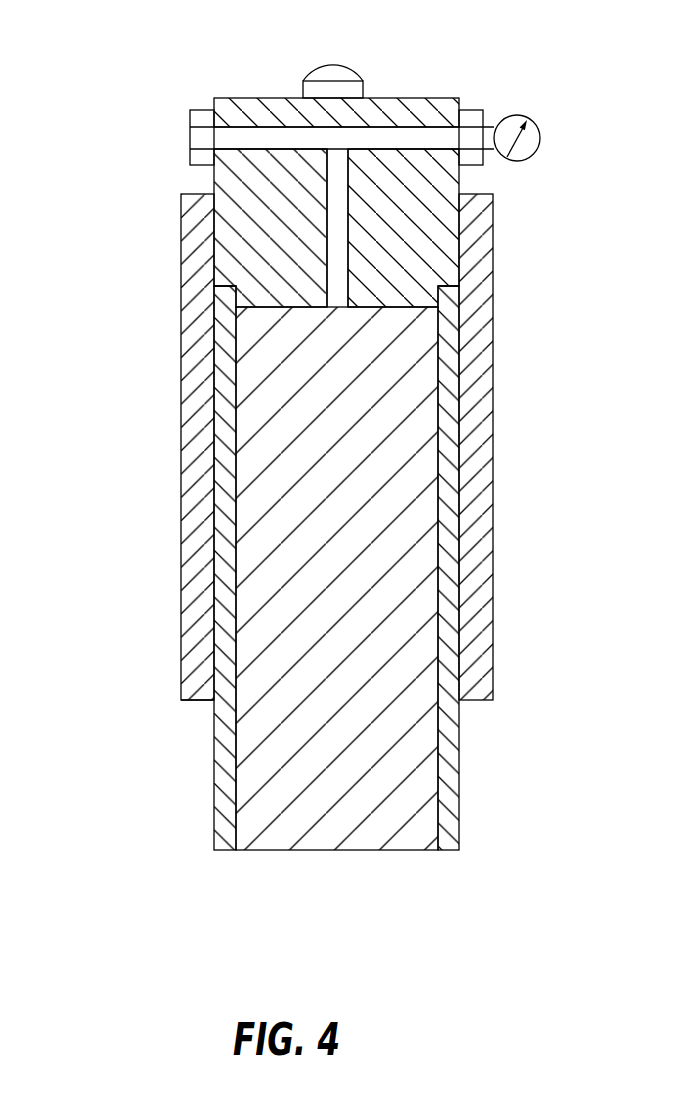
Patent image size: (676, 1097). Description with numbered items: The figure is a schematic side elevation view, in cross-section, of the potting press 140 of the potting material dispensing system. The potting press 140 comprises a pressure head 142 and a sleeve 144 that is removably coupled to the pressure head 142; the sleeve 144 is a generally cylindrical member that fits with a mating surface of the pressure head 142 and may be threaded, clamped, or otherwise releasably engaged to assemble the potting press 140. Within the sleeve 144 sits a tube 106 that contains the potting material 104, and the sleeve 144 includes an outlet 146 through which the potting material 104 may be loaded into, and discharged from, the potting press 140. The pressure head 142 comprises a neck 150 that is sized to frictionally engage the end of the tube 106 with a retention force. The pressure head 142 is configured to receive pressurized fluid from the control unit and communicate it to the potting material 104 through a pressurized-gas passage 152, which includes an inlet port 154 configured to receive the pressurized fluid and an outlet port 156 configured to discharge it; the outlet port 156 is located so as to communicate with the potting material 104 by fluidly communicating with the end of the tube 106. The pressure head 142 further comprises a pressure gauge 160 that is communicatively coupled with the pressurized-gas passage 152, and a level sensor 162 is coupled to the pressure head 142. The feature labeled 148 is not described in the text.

The potting press 140 is at (98, 244).
The pressure head 142 is at (249, 96).
The sleeve 144 is at (476, 517).
The outlet 146 is at (209, 710).
The left inner sleeve lip 148 is at (222, 300).
The neck 150 is at (458, 293).
The pressurized-gas passage 152 is at (386, 130).
The inlet port 154 is at (197, 118).
The outlet port 156 is at (335, 292).
The pressure gauge 160 is at (518, 115).
The level sensor 162 is at (332, 65).
The tube 106 is at (453, 783).
The potting material 104 is at (320, 835).